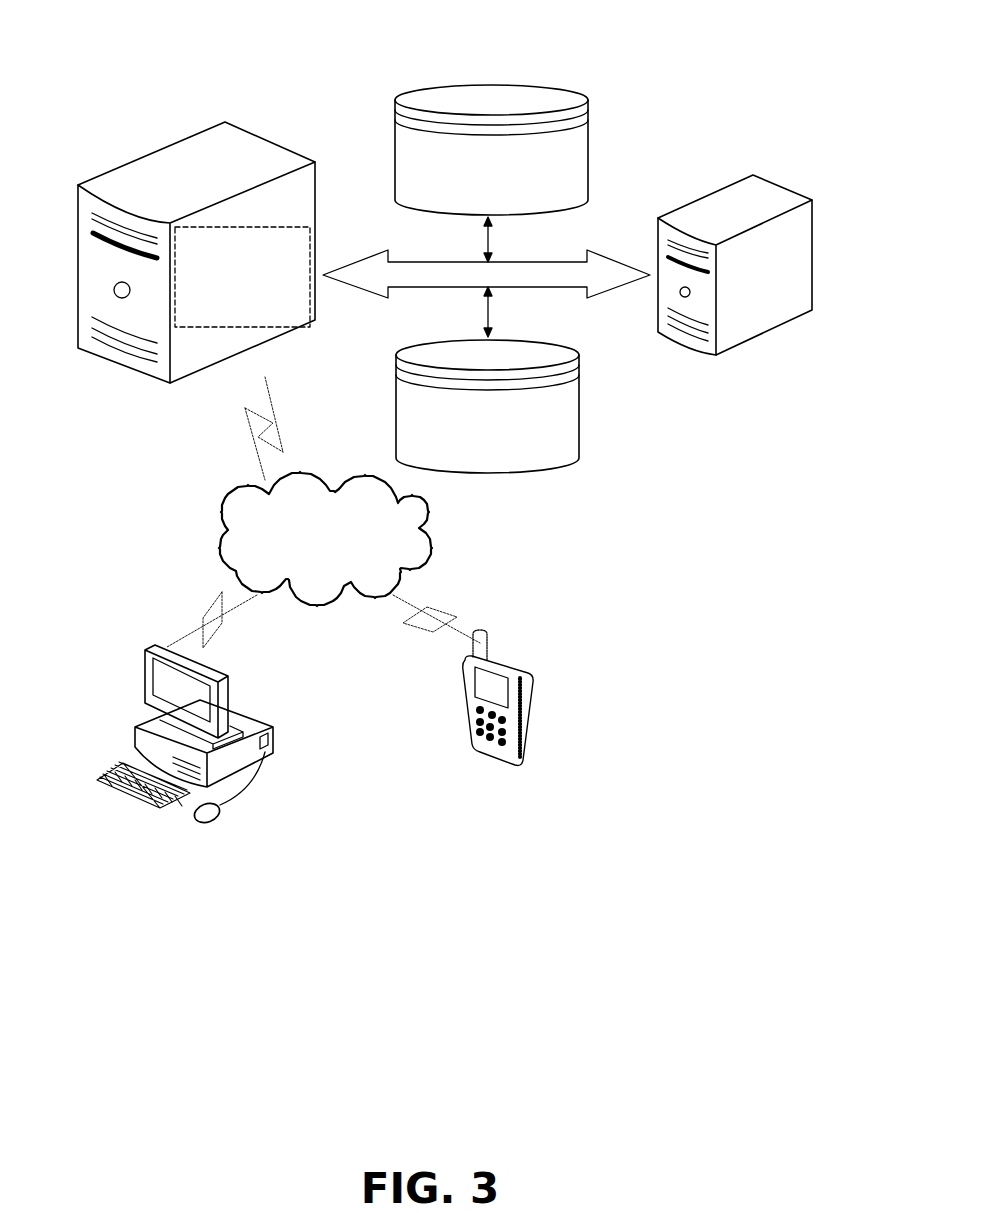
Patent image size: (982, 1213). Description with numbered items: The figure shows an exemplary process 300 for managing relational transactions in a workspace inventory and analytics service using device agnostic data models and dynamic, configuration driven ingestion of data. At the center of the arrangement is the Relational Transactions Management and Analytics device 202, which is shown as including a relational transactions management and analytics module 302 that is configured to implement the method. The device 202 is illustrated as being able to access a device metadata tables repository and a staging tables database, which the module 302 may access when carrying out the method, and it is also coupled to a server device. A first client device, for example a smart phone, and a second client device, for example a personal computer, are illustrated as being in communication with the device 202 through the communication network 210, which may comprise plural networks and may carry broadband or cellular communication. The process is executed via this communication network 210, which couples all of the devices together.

The exemplary process 300 is at (160, 92).
The Relational Transactions Management and Analytics (RTMA) device 202 is at (142, 196).
The relational transactions management and analytics module 302 is at (242, 277).
The communication network(s) 210 is at (408, 432).